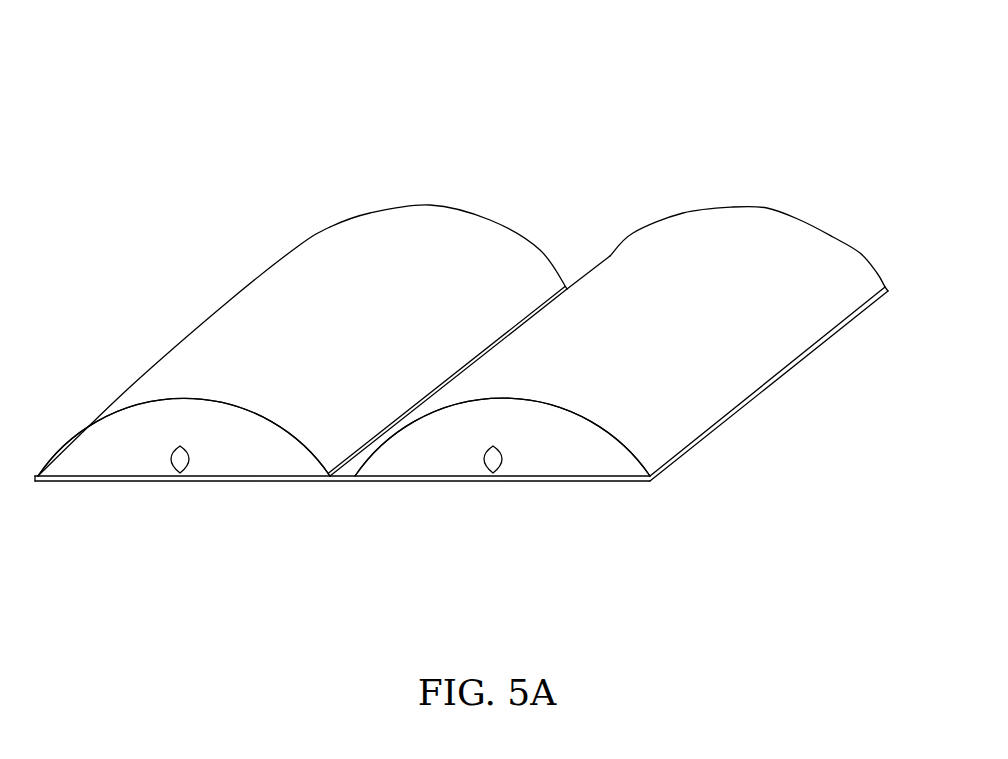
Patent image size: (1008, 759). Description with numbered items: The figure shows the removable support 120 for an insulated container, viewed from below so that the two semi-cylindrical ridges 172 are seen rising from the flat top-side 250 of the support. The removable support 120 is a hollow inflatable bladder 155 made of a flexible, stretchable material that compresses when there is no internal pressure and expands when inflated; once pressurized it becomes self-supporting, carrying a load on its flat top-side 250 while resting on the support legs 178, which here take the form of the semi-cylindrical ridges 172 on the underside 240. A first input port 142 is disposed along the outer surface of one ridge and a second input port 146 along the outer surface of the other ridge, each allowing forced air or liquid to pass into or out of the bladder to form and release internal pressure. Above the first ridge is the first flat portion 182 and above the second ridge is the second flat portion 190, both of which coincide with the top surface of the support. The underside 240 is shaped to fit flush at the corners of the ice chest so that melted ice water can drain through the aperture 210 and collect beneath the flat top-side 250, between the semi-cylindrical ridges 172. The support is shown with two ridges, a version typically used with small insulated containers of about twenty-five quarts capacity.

The removable support 120 is at (616, 81).
The first input port 142 is at (503, 458).
The second input port 146 is at (190, 462).
The inflatable bladder 155 is at (295, 280).
The semi-cylindrical ridges 172 is at (175, 398).
The support legs 178 is at (205, 398).
The first flat portion 182 is at (625, 483).
The second flat portion 190 is at (162, 482).
The aperture 210 is at (517, 296).
The underside 240 is at (380, 243).
The flat top-side 250 is at (407, 483).